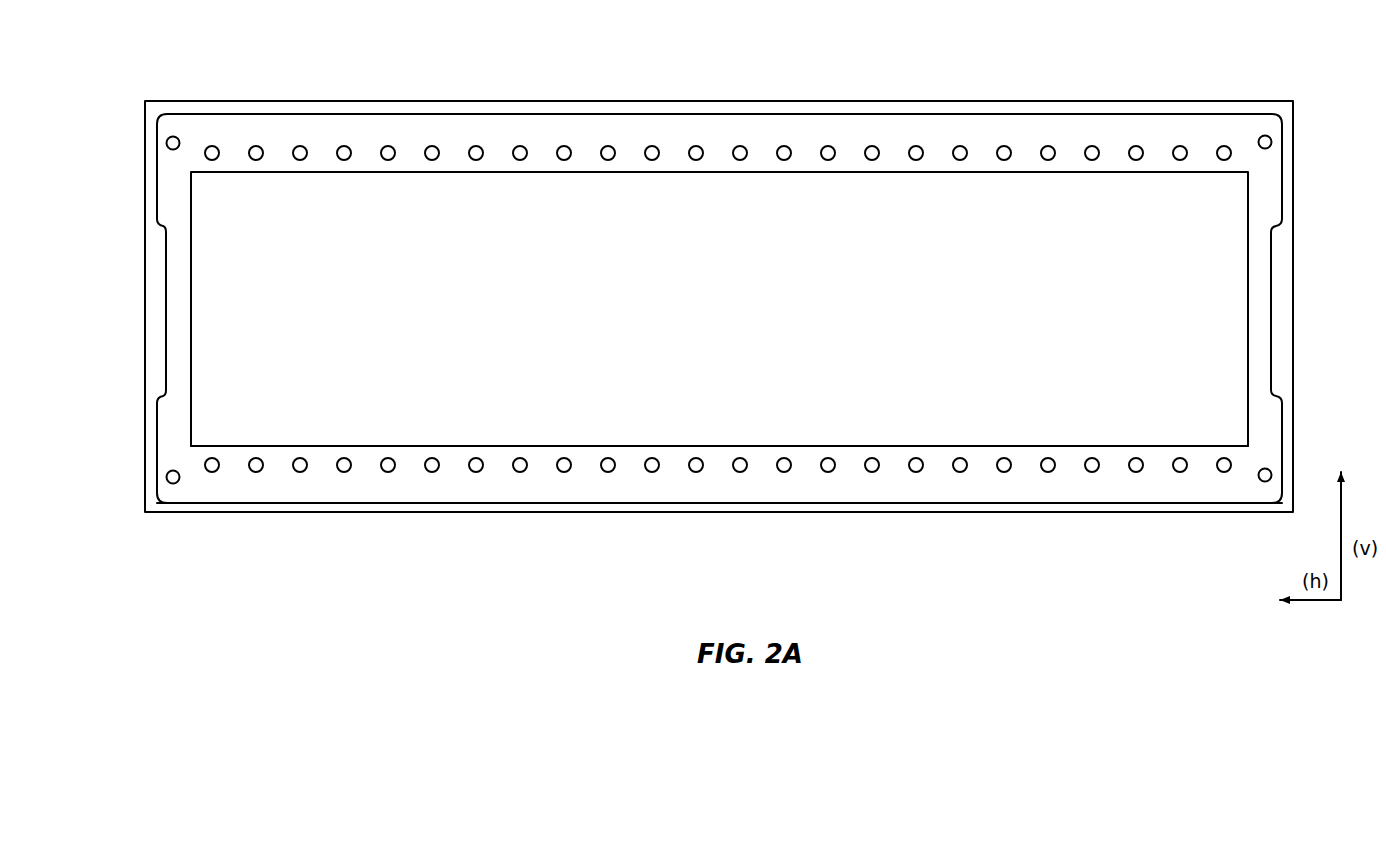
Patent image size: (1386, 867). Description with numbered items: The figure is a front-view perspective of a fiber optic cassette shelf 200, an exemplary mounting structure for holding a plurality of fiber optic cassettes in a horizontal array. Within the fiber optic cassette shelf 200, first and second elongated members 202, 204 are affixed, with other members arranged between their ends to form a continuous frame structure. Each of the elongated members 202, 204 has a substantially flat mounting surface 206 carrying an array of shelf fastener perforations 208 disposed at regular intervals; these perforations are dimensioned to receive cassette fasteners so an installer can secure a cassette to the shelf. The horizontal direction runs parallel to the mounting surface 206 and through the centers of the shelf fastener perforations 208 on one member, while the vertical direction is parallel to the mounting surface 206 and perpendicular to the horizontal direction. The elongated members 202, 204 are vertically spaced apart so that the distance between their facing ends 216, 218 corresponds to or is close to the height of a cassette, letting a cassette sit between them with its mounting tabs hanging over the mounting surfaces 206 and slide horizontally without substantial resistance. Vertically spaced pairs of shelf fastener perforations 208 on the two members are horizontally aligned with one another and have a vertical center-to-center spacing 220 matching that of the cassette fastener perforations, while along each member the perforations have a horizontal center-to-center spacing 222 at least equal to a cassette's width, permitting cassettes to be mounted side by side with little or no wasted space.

The fiber optic cassette shelf 200 is at (1021, 57).
The first elongated member 202 is at (193, 130).
The second elongated member 204 is at (192, 490).
The mounting surface 206 is at (170, 160).
The shelf fastener perforations 208 is at (256, 153).
The end of first elongated member 216 is at (632, 172).
The end of second elongated member 218 is at (737, 445).
The vertical center-to-center spacing 220 is at (1019, 153).
The horizontal center-to-center spacing 222 is at (345, 133).